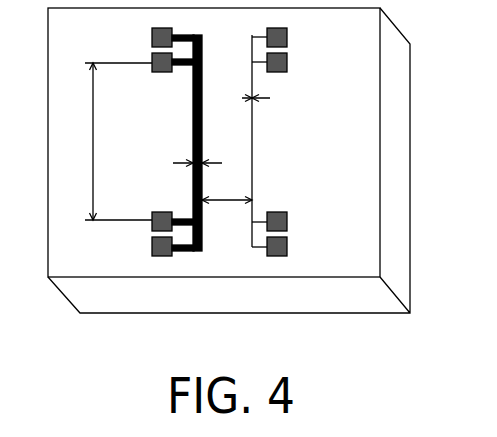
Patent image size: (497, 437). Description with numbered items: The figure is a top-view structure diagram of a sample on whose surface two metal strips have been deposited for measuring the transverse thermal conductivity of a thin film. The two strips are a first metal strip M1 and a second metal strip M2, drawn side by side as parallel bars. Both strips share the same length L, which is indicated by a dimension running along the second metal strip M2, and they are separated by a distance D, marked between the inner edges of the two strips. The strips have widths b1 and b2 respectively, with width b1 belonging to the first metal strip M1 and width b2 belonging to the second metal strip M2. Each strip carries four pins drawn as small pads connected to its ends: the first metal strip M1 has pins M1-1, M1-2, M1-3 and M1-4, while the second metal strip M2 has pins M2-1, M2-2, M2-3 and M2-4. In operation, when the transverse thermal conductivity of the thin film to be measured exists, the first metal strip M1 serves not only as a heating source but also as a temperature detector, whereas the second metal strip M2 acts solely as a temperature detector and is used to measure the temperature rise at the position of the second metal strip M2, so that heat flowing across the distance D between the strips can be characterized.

The first metal strip M1 is at (268, 141).
The second metal strip M2 is at (183, 143).
The first pin of first metal strip M1-1 is at (301, 38).
The second pin of first metal strip M1-2 is at (302, 64).
The third pin of first metal strip M1-3 is at (301, 224).
The fourth pin of first metal strip M1-4 is at (302, 249).
The first pin of second metal strip M2-1 is at (148, 38).
The second pin of second metal strip M2-2 is at (147, 76).
The third pin of second metal strip M2-3 is at (147, 210).
The fourth pin of second metal strip M2-4 is at (148, 249).
The length of metal strips L is at (115, 141).
The width of first metal strip b1 is at (272, 100).
The width of second metal strip b2 is at (186, 164).
The distance between metal strips D is at (227, 208).